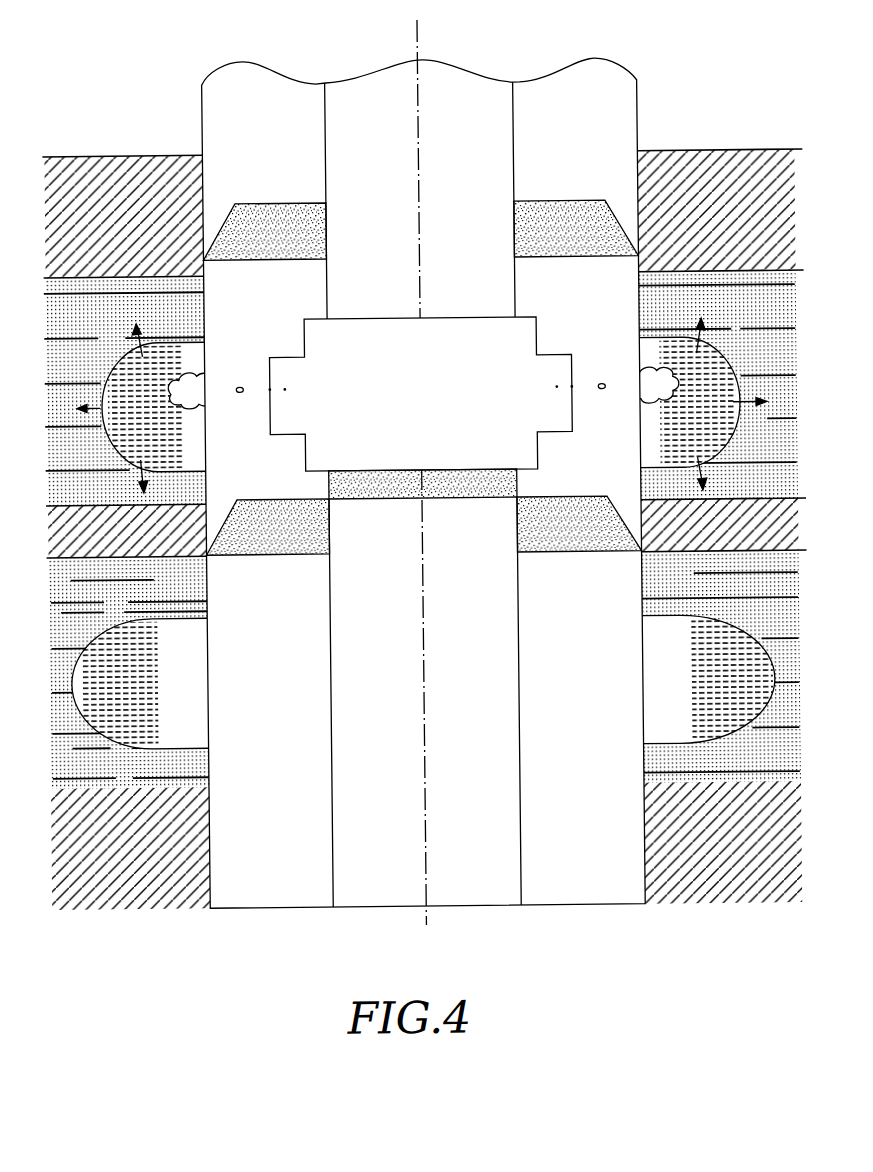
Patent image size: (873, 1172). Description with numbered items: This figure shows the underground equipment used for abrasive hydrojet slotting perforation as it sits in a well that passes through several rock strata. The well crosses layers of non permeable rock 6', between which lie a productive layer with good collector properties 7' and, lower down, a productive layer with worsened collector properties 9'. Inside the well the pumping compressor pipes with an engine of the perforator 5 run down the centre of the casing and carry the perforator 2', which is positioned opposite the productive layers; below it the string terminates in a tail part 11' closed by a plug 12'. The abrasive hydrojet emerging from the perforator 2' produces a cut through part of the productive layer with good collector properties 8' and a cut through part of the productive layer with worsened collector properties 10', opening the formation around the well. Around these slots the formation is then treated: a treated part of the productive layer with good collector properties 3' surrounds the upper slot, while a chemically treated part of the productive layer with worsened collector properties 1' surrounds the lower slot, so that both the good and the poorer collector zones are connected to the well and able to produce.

The chemically treated part of the productive layer with worsened collector properti 1' is at (141, 803).
The perforator 2' is at (423, 456).
The treated part of the productive layer with good collector properties 3' is at (146, 253).
The pumping compressor pipes with engine of the perforator 5 is at (389, 136).
The non permeable rock 6' is at (425, 458).
The productive layer with good collector properties 7' is at (419, 256).
The cut through part of the productive layer with good collector properties 8' is at (667, 248).
The productive layer with worsened collector properties 9' is at (426, 772).
The cut through part of the productive layer with worsened collector properties 10' is at (700, 803).
The tail part 11' is at (464, 508).
The plug 12' is at (424, 654).